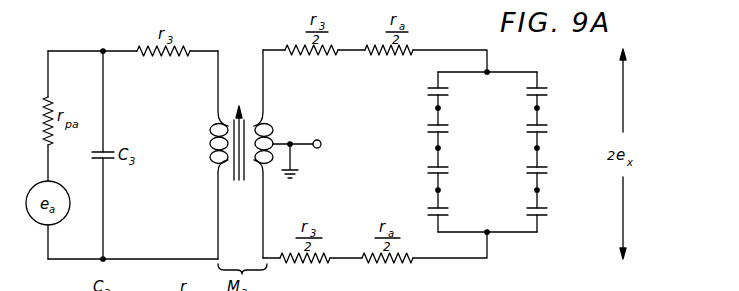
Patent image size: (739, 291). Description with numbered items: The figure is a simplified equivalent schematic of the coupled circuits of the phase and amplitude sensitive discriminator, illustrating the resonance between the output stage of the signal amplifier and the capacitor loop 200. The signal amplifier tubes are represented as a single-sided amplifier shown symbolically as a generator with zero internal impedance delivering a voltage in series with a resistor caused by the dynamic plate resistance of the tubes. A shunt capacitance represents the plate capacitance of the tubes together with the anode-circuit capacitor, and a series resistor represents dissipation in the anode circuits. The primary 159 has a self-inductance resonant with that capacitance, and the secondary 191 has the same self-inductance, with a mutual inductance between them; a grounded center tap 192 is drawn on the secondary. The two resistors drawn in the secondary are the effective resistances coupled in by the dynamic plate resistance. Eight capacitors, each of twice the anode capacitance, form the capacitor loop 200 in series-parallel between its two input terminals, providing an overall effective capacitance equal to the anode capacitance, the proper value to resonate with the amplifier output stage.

The primary 159 is at (212, 125).
The secondary 191 is at (266, 116).
The grounded center tap terminal 192 is at (312, 150).
The capacitor loop 200 is at (537, 70).